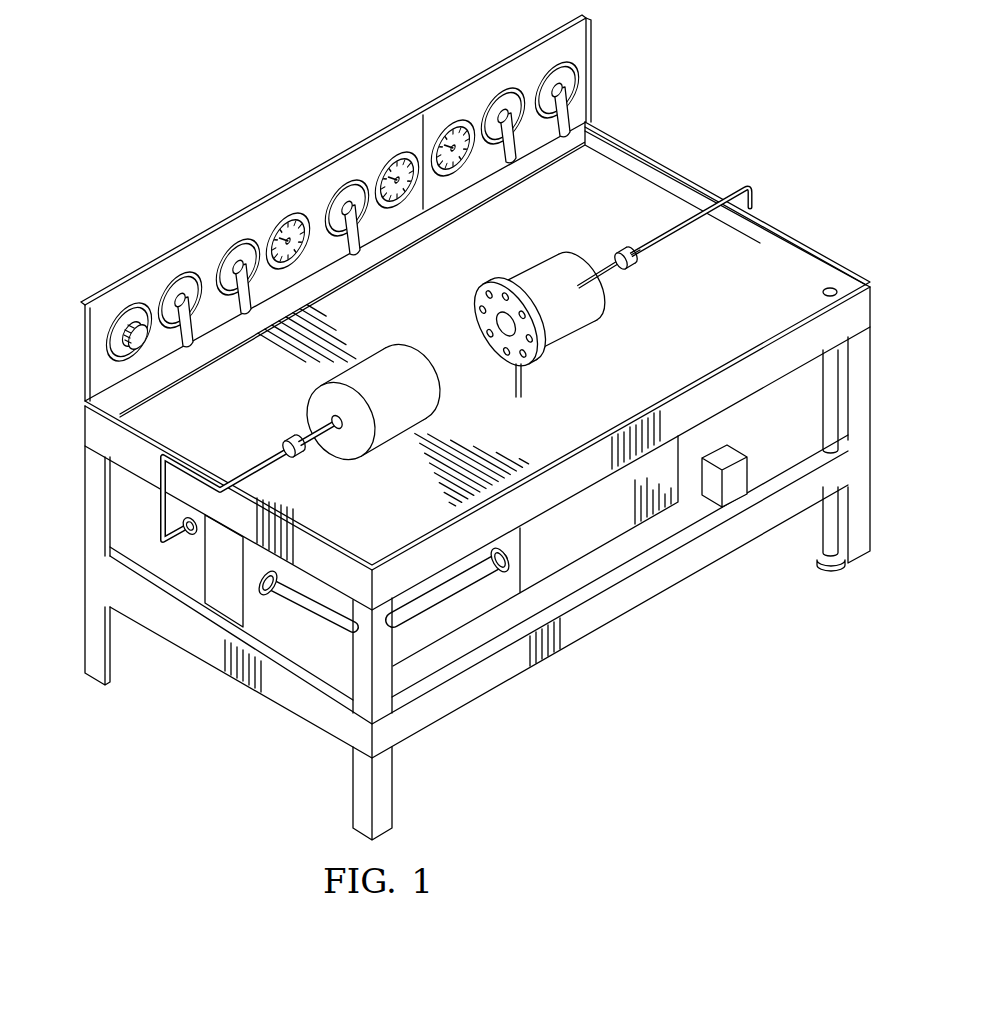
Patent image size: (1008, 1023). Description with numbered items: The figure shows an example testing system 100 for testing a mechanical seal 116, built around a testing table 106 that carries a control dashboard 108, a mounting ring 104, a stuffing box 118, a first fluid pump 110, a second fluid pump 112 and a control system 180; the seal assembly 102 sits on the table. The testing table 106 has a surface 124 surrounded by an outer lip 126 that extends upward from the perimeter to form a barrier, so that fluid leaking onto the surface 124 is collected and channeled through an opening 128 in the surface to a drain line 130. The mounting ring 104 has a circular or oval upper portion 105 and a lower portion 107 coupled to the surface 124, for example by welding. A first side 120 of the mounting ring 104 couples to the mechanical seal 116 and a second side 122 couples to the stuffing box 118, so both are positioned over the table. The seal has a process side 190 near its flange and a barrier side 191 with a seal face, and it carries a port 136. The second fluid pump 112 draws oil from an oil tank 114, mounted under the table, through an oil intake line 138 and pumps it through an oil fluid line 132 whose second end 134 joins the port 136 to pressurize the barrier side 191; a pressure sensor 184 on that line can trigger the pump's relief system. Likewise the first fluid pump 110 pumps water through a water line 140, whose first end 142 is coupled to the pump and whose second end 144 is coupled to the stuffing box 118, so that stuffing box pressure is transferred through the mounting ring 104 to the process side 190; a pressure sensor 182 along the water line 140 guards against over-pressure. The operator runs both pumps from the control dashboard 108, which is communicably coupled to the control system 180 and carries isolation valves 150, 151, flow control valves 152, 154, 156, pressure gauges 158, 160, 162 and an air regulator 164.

The testing system 100 is at (462, 420).
The motor test assembly 102 is at (569, 275).
The mounting ring 104 is at (508, 368).
The upper portion 105 is at (486, 338).
The testing table 106 is at (647, 145).
The lower portion 107 is at (526, 380).
The control dashboard 108 is at (297, 200).
The first fluid pump 110 is at (177, 563).
The second fluid pump 112 is at (227, 600).
The oil tank 114 is at (598, 530).
The mechanical seal 116 is at (590, 340).
The stuffing box 118 is at (399, 452).
The first side 120 is at (465, 323).
The second side 122 is at (495, 362).
The surface 124 is at (577, 421).
The outer lip 126 is at (818, 250).
The opening 128 is at (823, 292).
The drain line 130 is at (833, 515).
The oil fluid line 132 is at (748, 184).
The second end 134 is at (601, 286).
The port 136 is at (623, 250).
The oil intake line 138 is at (445, 596).
The water line 140 is at (262, 468).
The first end 142 is at (189, 536).
The second end 144 is at (330, 414).
The isolation valve 150 is at (172, 277).
The isolation valve 151 is at (557, 66).
The flow control valve 152 is at (234, 242).
The flow control valve 154 is at (343, 182).
The flow control valve 156 is at (500, 86).
The pressure gauge 158 is at (283, 213).
The pressure gauge 160 is at (395, 152).
The pressure gauge 162 is at (451, 120).
The air regulator 164 is at (125, 308).
The control system 180 is at (712, 505).
The pressure sensor 182 is at (301, 454).
The pressure sensor 184 is at (638, 262).
The process side 190 is at (465, 323).
The barrier side 191 is at (571, 289).